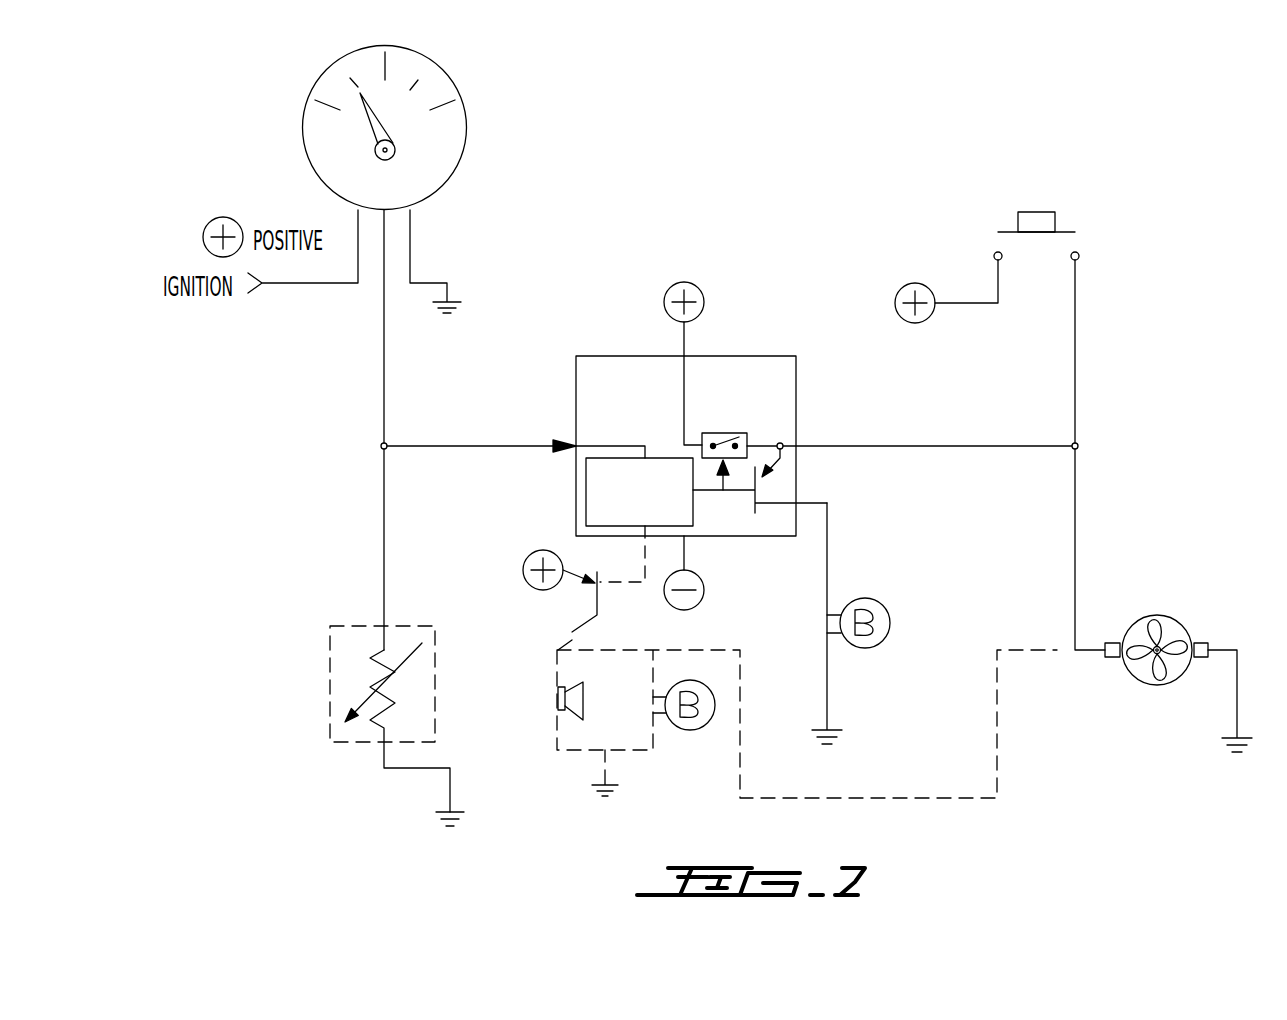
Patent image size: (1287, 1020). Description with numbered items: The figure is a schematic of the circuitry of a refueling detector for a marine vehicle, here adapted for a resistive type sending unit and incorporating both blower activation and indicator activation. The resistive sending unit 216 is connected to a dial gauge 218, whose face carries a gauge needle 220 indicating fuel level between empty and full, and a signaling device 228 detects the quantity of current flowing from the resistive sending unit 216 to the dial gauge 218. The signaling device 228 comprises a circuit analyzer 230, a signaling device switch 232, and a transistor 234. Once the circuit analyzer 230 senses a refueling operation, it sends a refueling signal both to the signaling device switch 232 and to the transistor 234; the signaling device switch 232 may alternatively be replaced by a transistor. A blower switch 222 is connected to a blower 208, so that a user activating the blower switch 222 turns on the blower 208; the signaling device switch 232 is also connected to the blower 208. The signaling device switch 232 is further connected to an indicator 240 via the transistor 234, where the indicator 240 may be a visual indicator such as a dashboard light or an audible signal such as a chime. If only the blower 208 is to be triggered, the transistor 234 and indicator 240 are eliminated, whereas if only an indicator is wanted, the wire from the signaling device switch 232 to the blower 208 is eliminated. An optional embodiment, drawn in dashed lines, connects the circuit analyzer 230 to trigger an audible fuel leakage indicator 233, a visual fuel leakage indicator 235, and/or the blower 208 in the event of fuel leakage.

The blower 208 is at (1177, 613).
The resistive sending unit 216 is at (355, 637).
The dial gauge 218 is at (302, 128).
The gauge needle 220 is at (387, 128).
The blower switch 222 is at (1057, 228).
The signaling device 228 is at (760, 338).
The circuit analyzer 230 is at (592, 472).
The signaling device switch 232 is at (747, 438).
The transistor 234 is at (755, 516).
The audible fuel leakage indicator 233 is at (563, 697).
The visual fuel leakage indicator 235 is at (707, 705).
The indicator 240 is at (863, 648).